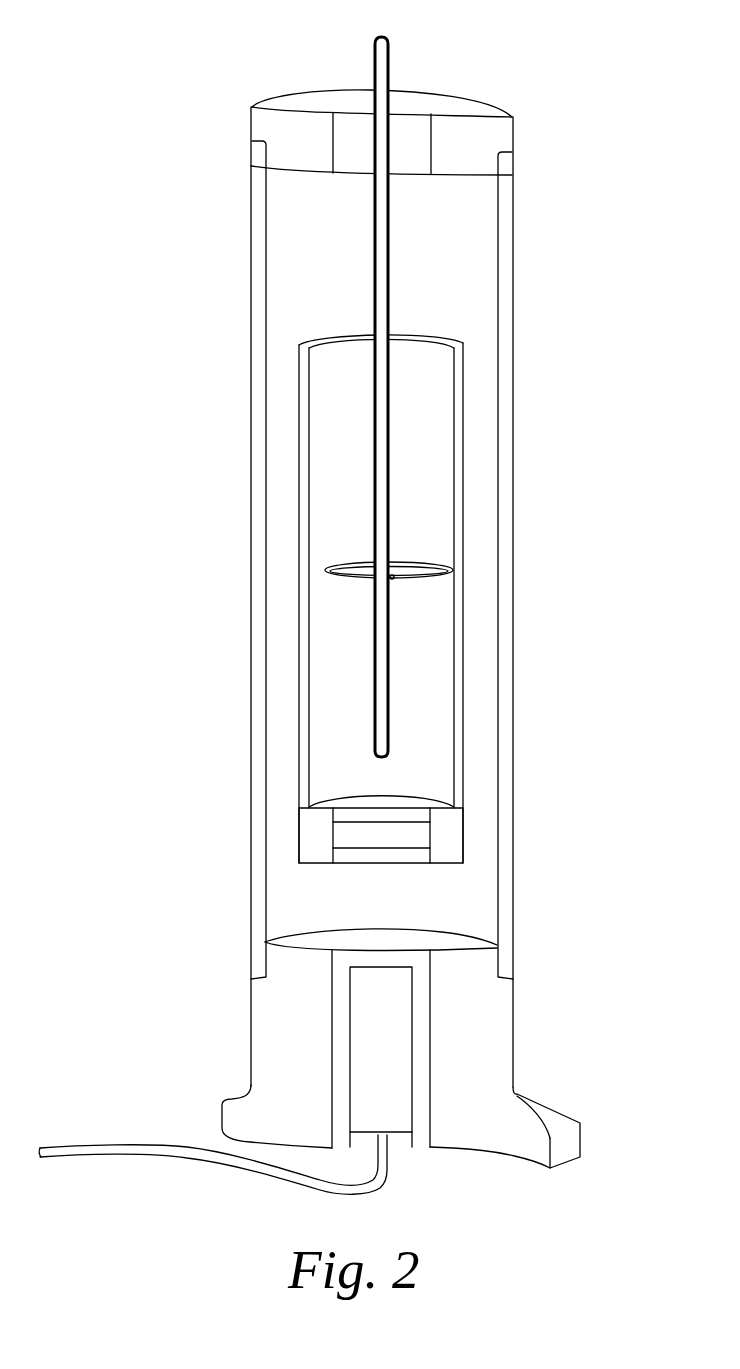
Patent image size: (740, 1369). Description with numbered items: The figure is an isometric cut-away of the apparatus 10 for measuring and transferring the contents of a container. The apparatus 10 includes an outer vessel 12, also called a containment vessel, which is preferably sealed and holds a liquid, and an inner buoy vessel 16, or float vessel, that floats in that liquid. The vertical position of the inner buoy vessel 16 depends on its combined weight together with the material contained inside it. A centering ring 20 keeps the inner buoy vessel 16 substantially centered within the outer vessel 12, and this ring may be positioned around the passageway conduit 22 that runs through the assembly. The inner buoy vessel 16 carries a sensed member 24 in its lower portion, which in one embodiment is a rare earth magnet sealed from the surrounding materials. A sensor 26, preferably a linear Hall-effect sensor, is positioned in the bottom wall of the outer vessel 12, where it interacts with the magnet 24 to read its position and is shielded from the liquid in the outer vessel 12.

The apparatus 10 is at (378, 597).
The outer vessel 12 is at (256, 401).
The inner buoy vessel 16 is at (462, 427).
The centering ring 20 is at (323, 571).
The passageway conduit 22 is at (389, 50).
The sensed member 24 is at (417, 835).
The sensor 26 is at (393, 1025).